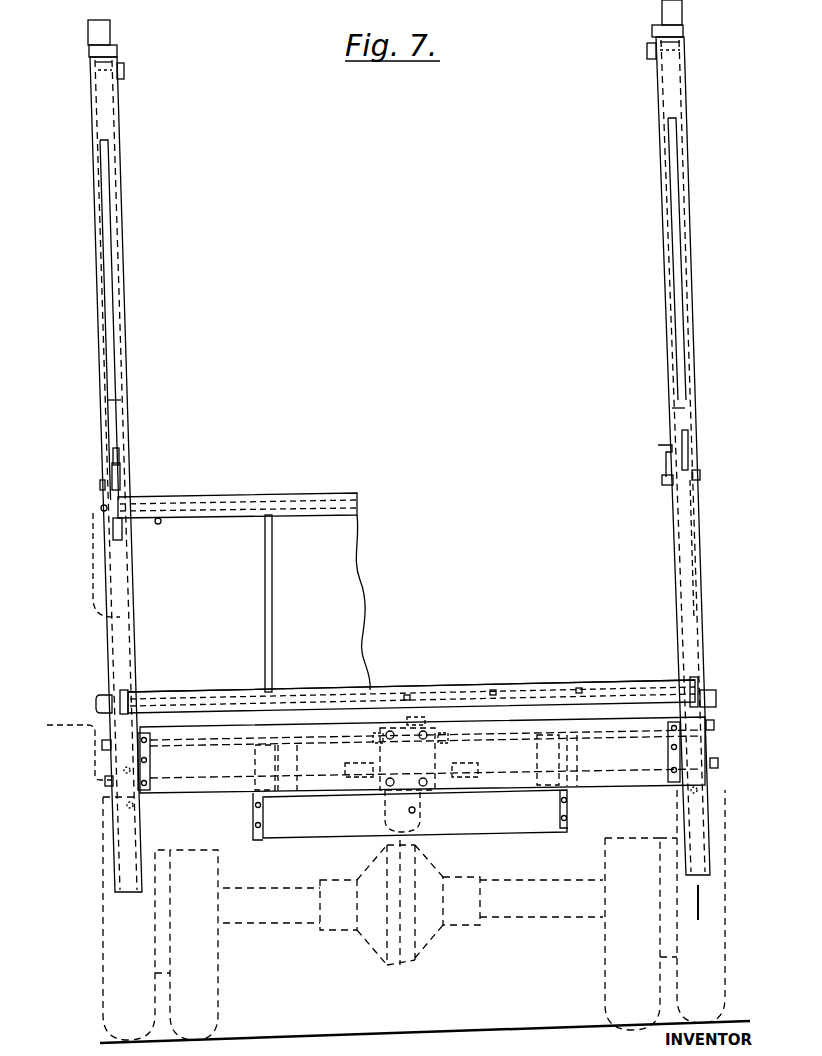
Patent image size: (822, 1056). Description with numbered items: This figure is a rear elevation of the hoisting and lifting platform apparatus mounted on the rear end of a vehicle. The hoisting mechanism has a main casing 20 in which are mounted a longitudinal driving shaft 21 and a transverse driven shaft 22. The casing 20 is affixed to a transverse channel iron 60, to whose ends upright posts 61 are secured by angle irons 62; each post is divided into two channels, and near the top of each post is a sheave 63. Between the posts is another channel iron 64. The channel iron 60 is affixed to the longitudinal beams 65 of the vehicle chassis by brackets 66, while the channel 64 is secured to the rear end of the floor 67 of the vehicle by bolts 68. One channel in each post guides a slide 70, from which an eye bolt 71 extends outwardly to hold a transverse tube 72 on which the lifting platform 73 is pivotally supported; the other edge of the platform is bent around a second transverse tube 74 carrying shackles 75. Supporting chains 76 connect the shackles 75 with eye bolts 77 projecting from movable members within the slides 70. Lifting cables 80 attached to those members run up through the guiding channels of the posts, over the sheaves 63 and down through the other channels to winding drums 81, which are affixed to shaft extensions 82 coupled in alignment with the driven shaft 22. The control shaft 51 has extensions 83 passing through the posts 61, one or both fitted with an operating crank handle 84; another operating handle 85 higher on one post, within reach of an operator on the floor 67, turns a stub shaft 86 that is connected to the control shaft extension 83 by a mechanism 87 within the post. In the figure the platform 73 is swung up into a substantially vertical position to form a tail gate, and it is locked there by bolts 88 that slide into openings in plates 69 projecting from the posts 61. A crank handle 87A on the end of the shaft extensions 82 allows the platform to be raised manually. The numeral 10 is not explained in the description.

The truck vehicle 10 is at (688, 352).
The main casing 20 is at (382, 803).
The longitudinal driving shaft 21 is at (408, 812).
The transverse driven shaft 22 is at (362, 770).
The control shaft 51 is at (378, 690).
The transverse channel iron 60 is at (215, 750).
The posts 61 is at (122, 282).
The angle irons 62 is at (150, 752).
The sheave 63 is at (100, 92).
The channel iron 64 is at (548, 688).
The longitudinal beams 65 is at (262, 838).
The brackets 66 is at (255, 810).
The floor 67 is at (455, 688).
The bolts 68 is at (495, 688).
The plates 69 is at (103, 487).
The slide 70 is at (112, 404).
The eye bolt 71 is at (118, 692).
The transverse tube 72 is at (275, 690).
The lifting platform 73 is at (352, 580).
The transverse tube 74 is at (357, 512).
The shackles 75 is at (113, 527).
The supporting chains 76 is at (93, 560).
The eye bolts 77 is at (113, 455).
The lifting cables 80 is at (110, 240).
The winding drums 81 is at (115, 795).
The shaft extensions 82 is at (283, 770).
The extensions 83 is at (248, 740).
The operating crank handle 84 is at (713, 710).
The operating handle 85 is at (667, 463).
The stub shaft 86 is at (672, 490).
The mechanism 87 is at (692, 552).
The crank handle 87A is at (92, 745).
The bolts 88 is at (100, 508).